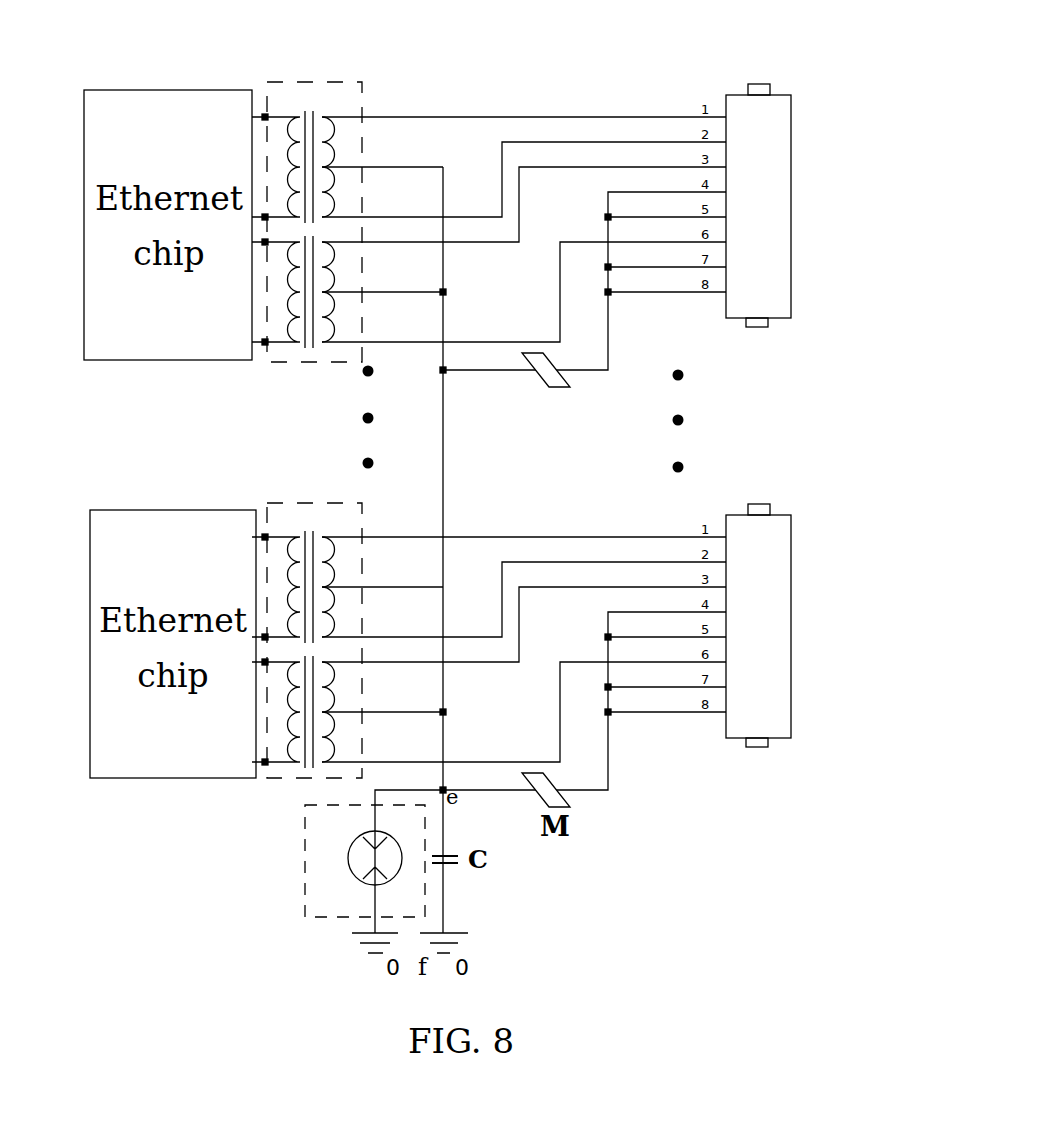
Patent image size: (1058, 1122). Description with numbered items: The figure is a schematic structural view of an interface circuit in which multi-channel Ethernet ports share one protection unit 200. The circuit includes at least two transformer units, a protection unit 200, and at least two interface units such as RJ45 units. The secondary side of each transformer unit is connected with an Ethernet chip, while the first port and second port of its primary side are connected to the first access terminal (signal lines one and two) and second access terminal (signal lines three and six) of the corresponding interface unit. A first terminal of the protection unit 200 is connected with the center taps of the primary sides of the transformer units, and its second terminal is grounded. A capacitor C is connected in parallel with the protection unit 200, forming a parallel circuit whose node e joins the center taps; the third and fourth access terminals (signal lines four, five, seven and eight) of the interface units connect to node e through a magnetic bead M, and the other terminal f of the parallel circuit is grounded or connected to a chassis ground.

The protection unit 200 is at (305, 867).